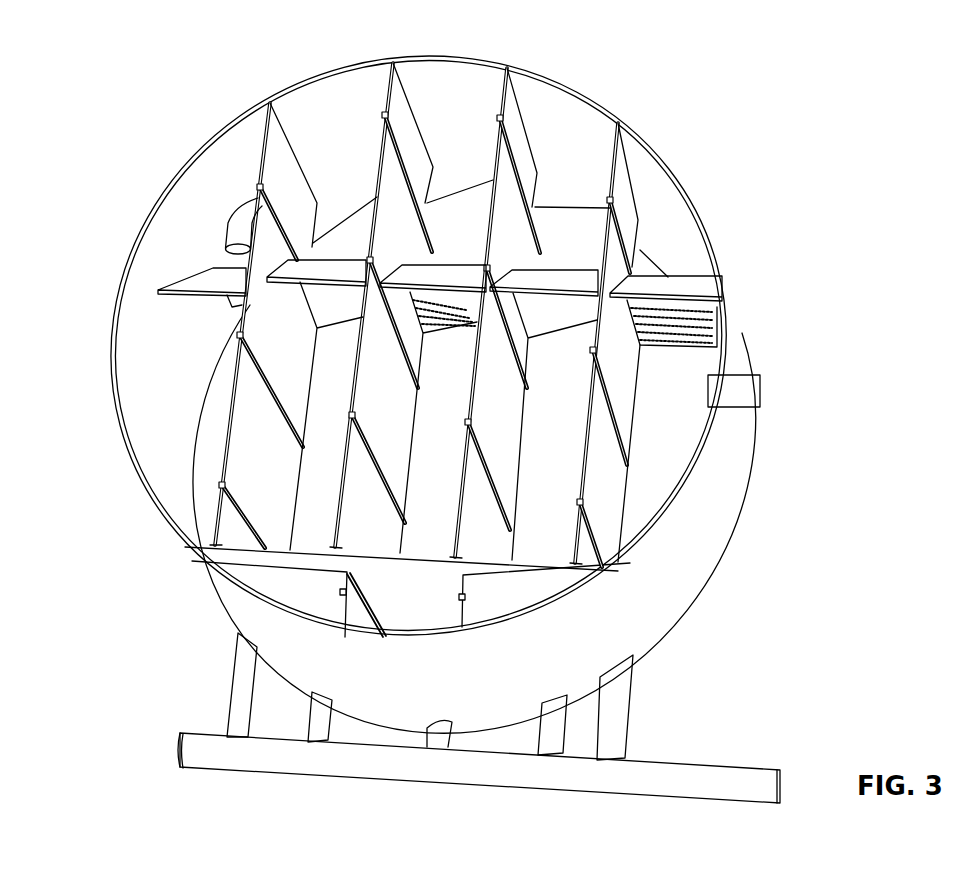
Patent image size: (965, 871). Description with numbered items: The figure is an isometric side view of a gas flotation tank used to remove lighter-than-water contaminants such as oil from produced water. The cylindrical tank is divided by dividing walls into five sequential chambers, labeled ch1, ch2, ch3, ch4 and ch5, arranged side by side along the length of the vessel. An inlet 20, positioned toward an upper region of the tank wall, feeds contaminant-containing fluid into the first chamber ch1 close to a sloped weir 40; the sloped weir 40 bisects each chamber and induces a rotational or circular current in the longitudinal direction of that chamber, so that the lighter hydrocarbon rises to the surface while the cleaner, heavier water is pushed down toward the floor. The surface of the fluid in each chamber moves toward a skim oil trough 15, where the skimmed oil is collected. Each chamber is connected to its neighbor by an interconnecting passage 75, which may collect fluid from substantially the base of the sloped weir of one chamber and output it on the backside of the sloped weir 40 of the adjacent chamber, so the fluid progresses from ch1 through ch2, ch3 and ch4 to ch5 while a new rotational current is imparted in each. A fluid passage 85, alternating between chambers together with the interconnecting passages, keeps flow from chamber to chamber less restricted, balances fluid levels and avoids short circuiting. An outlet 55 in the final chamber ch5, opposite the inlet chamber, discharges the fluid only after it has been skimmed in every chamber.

The skim oil trough 15 is at (527, 593).
The inlet 20 is at (233, 230).
The sloped weir 40 is at (208, 283).
The outlet 55 is at (752, 383).
The interconnecting passage 75 is at (313, 245).
The fluid passage 85 is at (665, 317).
The channel 1 ch1 is at (213, 380).
The channel 2 ch2 is at (316, 405).
The channel 3 ch3 is at (433, 409).
The channel 4 ch4 is at (544, 415).
The channel 5 ch5 is at (666, 419).